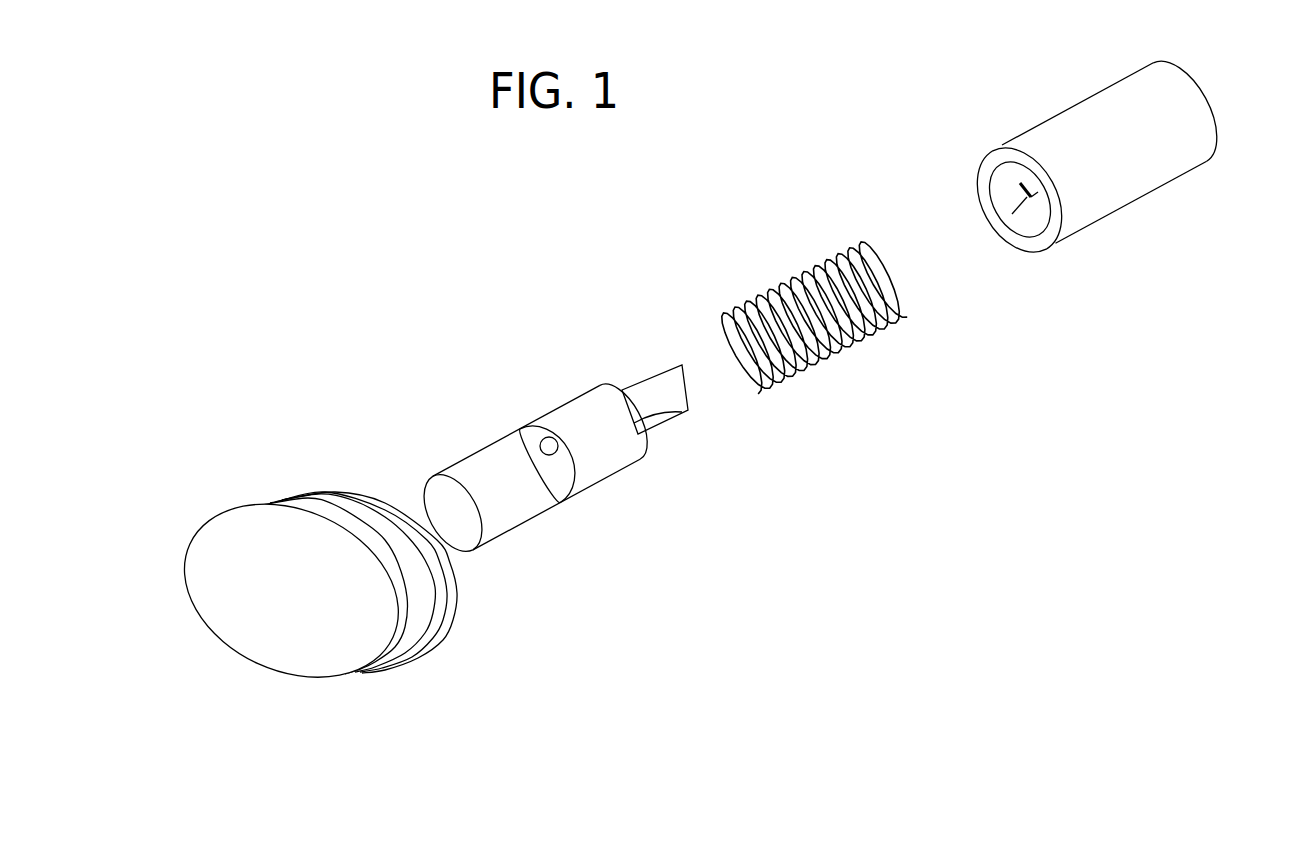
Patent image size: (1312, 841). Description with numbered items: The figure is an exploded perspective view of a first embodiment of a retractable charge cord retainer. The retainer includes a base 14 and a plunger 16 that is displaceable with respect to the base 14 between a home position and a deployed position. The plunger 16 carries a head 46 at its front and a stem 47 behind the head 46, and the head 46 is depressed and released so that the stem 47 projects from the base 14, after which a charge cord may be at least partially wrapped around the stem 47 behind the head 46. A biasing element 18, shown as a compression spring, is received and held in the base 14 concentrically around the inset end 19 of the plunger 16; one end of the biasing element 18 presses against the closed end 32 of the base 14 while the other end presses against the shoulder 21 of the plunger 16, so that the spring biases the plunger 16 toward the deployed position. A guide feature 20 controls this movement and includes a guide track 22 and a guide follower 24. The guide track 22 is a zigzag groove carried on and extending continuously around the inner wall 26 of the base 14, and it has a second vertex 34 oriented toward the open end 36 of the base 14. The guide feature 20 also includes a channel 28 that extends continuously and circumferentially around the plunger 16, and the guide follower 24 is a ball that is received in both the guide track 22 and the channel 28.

The base 14 is at (1082, 176).
The plunger 16 is at (333, 458).
The biasing element 18 is at (827, 353).
The inset end 19 is at (645, 398).
The guide feature 20 is at (729, 426).
The shoulder 21 is at (682, 412).
The guide track 22 is at (1027, 197).
The guide follower 24 is at (614, 458).
The inner wall 26 is at (1021, 184).
The channel 28 is at (530, 430).
The closed end 32 is at (1200, 87).
The second vertex 34 is at (1018, 197).
The open end 36 is at (990, 187).
The head 46 is at (260, 627).
The stem 47 is at (512, 510).